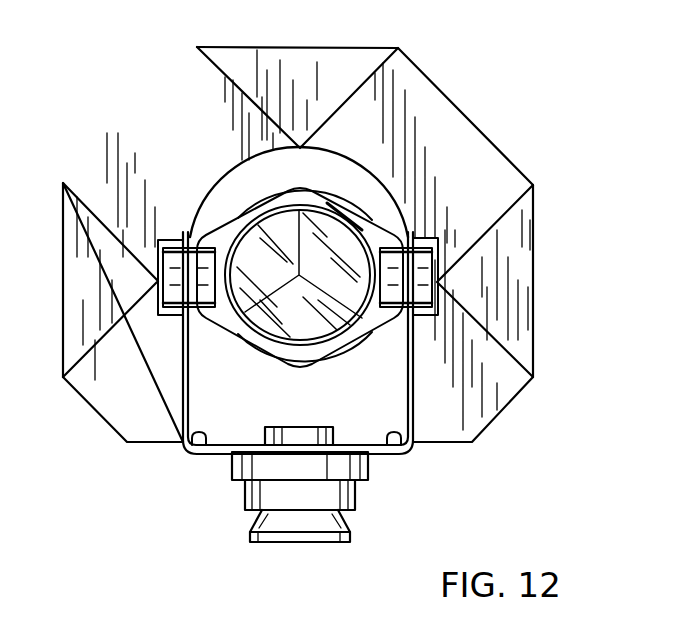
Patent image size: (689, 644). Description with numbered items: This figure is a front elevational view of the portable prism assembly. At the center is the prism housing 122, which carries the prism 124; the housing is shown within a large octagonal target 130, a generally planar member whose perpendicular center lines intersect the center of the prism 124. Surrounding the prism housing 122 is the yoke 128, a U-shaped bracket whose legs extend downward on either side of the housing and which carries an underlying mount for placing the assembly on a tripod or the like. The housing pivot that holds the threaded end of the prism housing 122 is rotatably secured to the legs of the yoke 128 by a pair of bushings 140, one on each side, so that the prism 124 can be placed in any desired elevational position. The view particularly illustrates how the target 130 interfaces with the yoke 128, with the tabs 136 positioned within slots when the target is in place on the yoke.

The prism housing 122 is at (238, 228).
The prism 124 is at (317, 255).
The yoke 128 is at (208, 455).
The target 130 is at (480, 127).
The tabs 136 is at (197, 430).
The bushings 140 is at (455, 243).